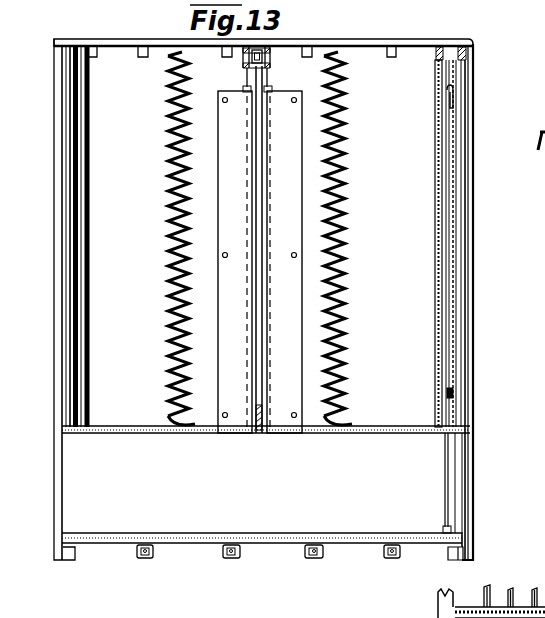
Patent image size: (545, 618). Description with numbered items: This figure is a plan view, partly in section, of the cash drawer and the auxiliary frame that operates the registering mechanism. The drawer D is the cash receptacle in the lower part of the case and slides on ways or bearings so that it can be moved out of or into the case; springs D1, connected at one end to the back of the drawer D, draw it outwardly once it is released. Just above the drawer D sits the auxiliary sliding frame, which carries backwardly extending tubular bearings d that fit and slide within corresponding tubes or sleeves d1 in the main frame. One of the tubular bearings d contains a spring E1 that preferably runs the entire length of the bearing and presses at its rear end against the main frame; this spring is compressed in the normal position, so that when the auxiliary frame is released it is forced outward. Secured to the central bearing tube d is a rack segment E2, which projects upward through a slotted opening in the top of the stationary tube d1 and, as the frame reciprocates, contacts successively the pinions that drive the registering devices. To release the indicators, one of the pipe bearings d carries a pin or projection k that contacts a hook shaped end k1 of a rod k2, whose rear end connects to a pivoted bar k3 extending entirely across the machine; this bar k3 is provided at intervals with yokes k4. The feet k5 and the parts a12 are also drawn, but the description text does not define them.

The tubular bearing d is at (66, 66).
The tube or sleeve d1 is at (498, 313).
The drawer D is at (349, 238).
The spring D1 is at (365, 240).
The spring E1 is at (346, 34).
The rack segment E2 is at (254, 433).
The pin or projection k is at (453, 394).
The hook shaped end k1 is at (455, 96).
The rod k2 is at (446, 481).
The pivoted bar k3 is at (210, 539).
The yoke k4 is at (225, 558).
The foot k5 is at (153, 551).
The post a12 is at (535, 592).